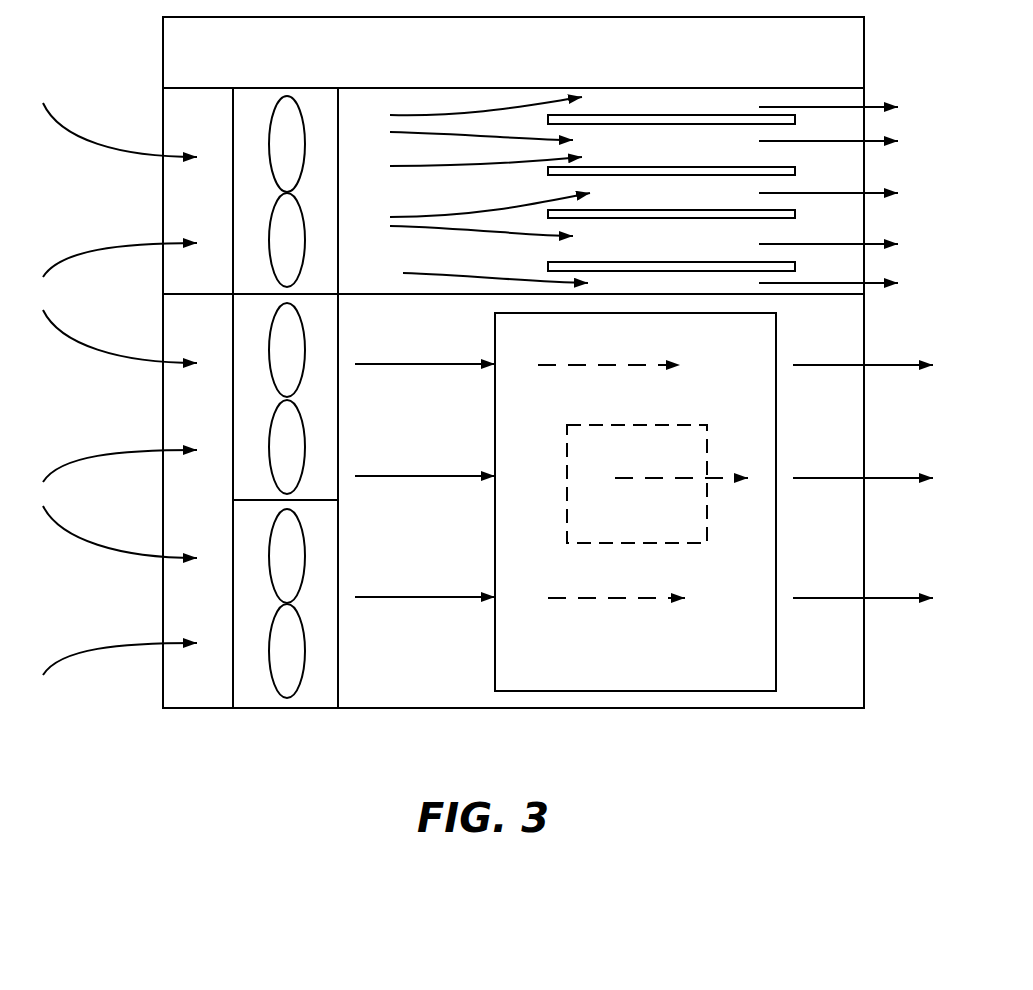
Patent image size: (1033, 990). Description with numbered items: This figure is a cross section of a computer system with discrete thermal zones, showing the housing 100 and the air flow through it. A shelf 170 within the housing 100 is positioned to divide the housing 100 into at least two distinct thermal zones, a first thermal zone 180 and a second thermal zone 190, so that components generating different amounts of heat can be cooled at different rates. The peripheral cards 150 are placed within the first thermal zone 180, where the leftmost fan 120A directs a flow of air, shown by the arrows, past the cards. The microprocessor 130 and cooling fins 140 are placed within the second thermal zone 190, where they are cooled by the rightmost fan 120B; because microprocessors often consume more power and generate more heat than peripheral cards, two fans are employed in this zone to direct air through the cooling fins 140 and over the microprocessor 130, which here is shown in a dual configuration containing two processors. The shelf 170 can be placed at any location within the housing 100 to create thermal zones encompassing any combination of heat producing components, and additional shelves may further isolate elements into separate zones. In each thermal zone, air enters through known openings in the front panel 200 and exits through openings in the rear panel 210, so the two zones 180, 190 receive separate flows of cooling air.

The housing 100 is at (260, 745).
The leftmost fan 120A is at (233, 214).
The rightmost fan 120B is at (233, 476).
The microprocessor 130 is at (652, 425).
The cooling fins 140 is at (699, 313).
The peripheral card 150 is at (700, 124).
The shelf 170 is at (392, 294).
The first thermal zone 180 is at (630, 190).
The second thermal zone 190 is at (425, 480).
The front panel 200 is at (163, 583).
The rear panel 210 is at (864, 658).